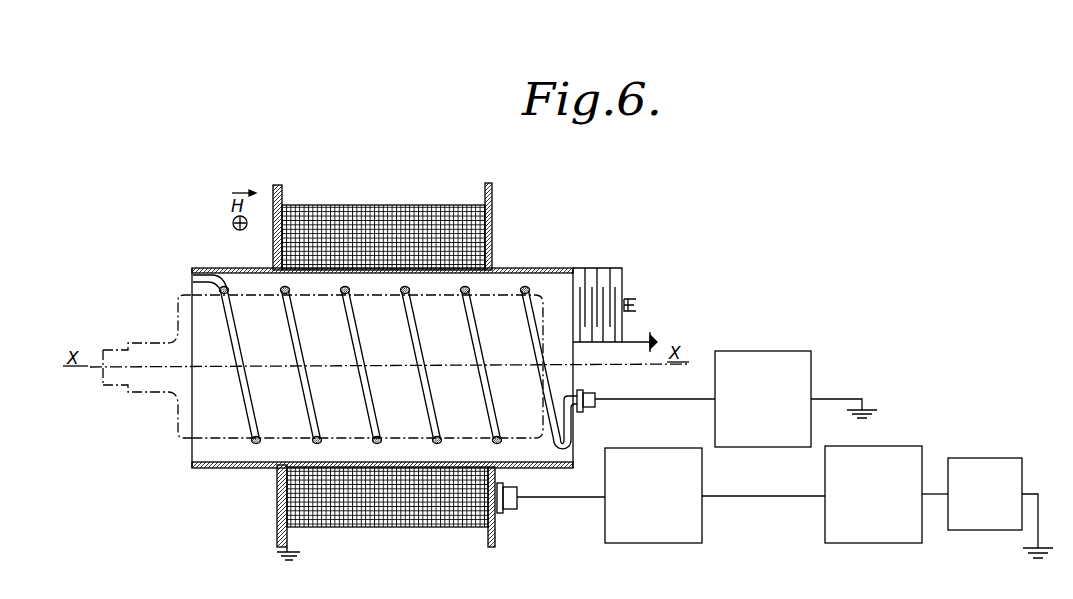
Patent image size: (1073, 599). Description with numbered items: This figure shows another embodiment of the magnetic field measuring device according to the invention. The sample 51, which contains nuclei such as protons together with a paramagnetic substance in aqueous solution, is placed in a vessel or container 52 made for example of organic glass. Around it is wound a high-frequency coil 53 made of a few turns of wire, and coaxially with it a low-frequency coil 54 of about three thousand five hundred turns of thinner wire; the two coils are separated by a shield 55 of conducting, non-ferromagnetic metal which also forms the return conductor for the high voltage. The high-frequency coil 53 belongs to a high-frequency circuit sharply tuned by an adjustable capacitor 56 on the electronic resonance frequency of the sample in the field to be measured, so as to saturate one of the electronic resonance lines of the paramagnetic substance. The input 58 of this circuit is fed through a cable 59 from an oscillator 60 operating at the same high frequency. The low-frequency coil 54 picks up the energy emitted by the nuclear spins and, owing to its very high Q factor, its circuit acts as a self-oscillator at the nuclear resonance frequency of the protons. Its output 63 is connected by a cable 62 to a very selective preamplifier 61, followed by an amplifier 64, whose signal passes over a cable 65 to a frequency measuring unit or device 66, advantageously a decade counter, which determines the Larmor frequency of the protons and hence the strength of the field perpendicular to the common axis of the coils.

The sample 51 is at (270, 402).
The vessel or container 52 is at (182, 320).
The high-frequency coil 53 is at (257, 444).
The low-frequency coil 54 is at (374, 205).
The shield 55 is at (528, 267).
The adjustable capacitor 56 is at (610, 280).
The input 58 is at (594, 393).
The cable 59 is at (676, 393).
The oscillator 60 is at (762, 357).
The preamplifier 61 is at (648, 457).
The cable 62 is at (571, 498).
The output 63 is at (512, 508).
The amplifier 64 is at (830, 511).
The cable 65 is at (935, 492).
The frequency measuring unit or device 66 is at (998, 462).